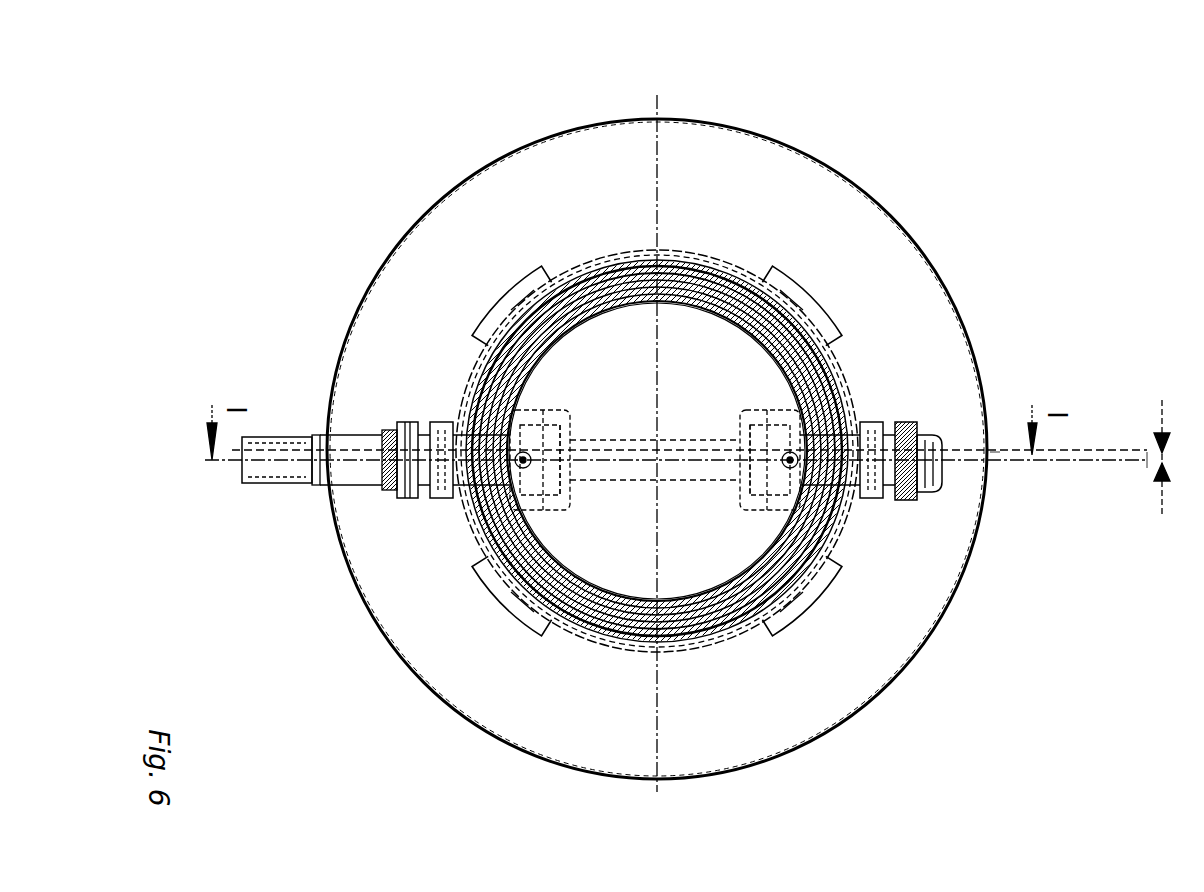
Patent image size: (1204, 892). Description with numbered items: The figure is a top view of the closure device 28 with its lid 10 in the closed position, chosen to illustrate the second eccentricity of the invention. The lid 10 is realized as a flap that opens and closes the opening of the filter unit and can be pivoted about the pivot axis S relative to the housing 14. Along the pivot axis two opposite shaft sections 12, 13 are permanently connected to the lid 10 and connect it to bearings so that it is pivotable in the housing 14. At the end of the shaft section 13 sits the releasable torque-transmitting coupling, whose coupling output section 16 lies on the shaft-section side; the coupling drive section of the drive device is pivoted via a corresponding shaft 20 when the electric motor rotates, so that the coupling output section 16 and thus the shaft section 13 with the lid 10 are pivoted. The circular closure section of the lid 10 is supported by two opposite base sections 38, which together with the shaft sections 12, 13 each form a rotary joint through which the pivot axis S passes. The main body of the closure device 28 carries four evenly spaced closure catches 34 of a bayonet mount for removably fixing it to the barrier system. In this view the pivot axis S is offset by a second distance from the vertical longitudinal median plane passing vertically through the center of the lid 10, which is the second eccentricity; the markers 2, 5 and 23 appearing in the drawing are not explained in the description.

The rotation axis 2 is at (1166, 438).
The gap between disc and housing 5 is at (1010, 467).
The lid 10 is at (595, 262).
The shaft section 12 is at (360, 436).
The shaft section 13 is at (888, 498).
The housing 14 is at (565, 278).
The coupling output section 16 is at (657, 451).
The shaft 20 is at (884, 212).
The shaft axis 23 is at (1107, 450).
The closure device 28 is at (925, 245).
The closure catch 34 is at (813, 608).
The base section 38 is at (567, 417).